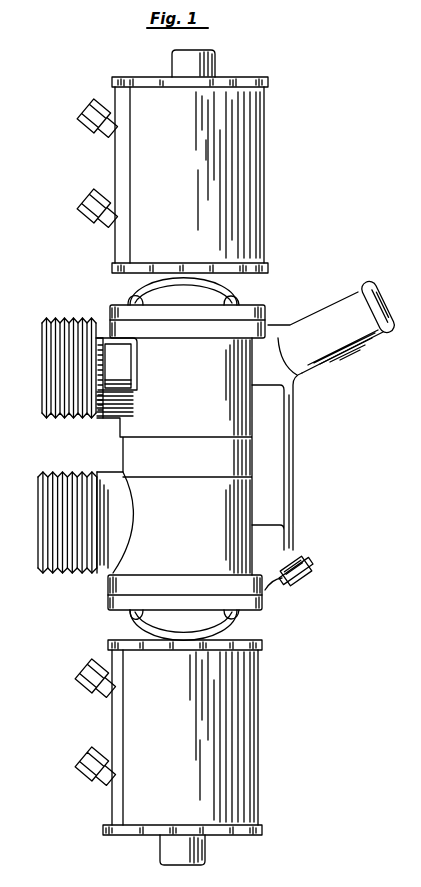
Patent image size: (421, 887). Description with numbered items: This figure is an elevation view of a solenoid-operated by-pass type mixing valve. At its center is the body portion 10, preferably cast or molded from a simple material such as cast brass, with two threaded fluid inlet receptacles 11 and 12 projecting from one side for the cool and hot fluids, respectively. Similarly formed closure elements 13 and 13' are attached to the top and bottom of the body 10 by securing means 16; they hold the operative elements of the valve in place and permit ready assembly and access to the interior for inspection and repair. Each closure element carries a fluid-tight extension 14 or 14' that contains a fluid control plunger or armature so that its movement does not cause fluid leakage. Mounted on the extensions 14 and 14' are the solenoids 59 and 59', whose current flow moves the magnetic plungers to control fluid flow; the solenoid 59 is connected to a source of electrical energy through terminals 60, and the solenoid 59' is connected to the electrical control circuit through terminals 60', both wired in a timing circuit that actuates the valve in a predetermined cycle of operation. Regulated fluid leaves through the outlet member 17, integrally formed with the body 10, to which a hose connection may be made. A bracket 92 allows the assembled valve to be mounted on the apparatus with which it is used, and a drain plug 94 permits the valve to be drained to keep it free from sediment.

The body portion 10 is at (293, 466).
The fluid inlet receptacle 11 is at (40, 557).
The fluid inlet receptacle 12 is at (57, 320).
The closure element 13 is at (199, 291).
The closure element 13' is at (203, 626).
The extension 14 is at (212, 60).
The extension 14' is at (201, 854).
The securing means 16 is at (133, 300).
The outlet member 17 is at (350, 298).
The solenoid 59 is at (208, 175).
The solenoid 59' is at (203, 737).
The terminals 60 is at (97, 146).
The terminals 60' is at (89, 712).
The bracket 92 is at (131, 371).
The drain plug 94 is at (306, 580).